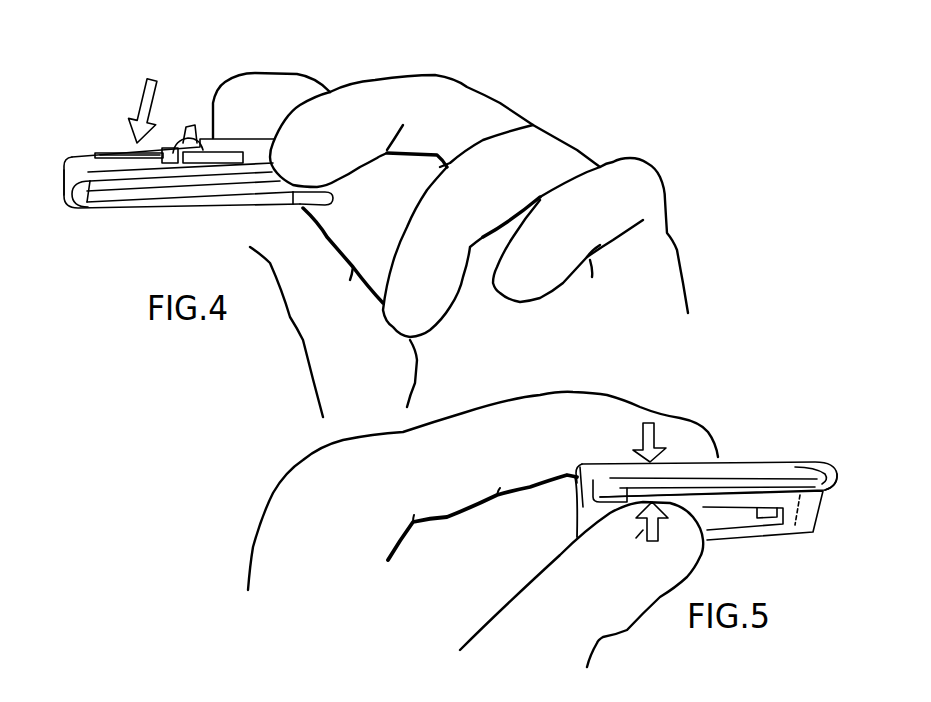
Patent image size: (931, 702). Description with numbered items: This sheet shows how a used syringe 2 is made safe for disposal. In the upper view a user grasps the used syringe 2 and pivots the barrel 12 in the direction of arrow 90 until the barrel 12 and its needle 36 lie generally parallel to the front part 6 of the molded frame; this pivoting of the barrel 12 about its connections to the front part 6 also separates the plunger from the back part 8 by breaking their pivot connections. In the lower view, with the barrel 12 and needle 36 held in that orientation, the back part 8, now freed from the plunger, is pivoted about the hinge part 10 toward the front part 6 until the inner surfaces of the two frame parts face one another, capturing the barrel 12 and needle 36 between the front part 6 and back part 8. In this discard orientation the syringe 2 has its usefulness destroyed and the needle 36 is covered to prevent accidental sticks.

In FIG. 4, the syringe 2 is at (128, 227).
In FIG. 5, the syringe 2 is at (790, 442).
In FIG. 5, the front part 6 is at (765, 458).
In FIG. 4, the back part 8 is at (180, 207).
In FIG. 5, the back part 8 is at (797, 517).
In FIG. 4, the hinge part 10 is at (55, 183).
In FIG. 5, the hinge part 10 is at (837, 490).
In FIG. 4, the barrel 12 is at (208, 133).
In FIG. 4, the needle 36 is at (113, 160).
In FIG. 4, the arrow 90 is at (133, 110).